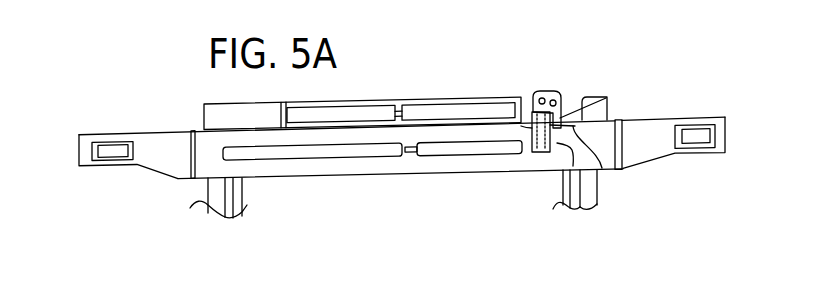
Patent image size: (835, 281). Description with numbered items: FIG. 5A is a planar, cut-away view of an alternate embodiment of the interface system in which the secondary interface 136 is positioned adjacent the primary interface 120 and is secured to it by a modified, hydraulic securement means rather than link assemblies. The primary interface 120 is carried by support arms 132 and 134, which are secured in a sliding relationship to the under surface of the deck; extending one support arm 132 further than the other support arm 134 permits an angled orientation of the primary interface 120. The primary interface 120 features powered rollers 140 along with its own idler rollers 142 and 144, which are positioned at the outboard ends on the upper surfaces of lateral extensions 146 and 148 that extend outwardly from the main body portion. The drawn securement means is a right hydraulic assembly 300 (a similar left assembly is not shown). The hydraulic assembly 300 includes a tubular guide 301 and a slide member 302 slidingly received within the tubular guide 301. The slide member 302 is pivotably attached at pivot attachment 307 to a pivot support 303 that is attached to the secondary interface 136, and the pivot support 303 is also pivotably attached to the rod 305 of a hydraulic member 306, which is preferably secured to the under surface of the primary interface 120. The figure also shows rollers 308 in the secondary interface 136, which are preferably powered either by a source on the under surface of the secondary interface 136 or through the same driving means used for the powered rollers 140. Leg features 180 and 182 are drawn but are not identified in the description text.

The primary interface 120 is at (210, 167).
The support arm 132 is at (208, 202).
The support arm 134 is at (597, 200).
The secondary interface 136 is at (213, 123).
The powered rollers 140 is at (390, 151).
The idler roller 142 is at (697, 138).
The idler roller 144 is at (117, 150).
The lateral extension 146 is at (657, 138).
The lateral extension 148 is at (168, 157).
The mounting leg 180 is at (563, 192).
The mounting leg 182 is at (247, 205).
The right hydraulic assembly 300 is at (565, 86).
The tubular guide 301 is at (527, 108).
The slide member 302 is at (530, 110).
The pivot support 303 is at (549, 91).
The rod 305 is at (605, 118).
The hydraulic member 306 is at (601, 169).
The pivot attachment 307 is at (536, 91).
The rollers 308 is at (410, 117).